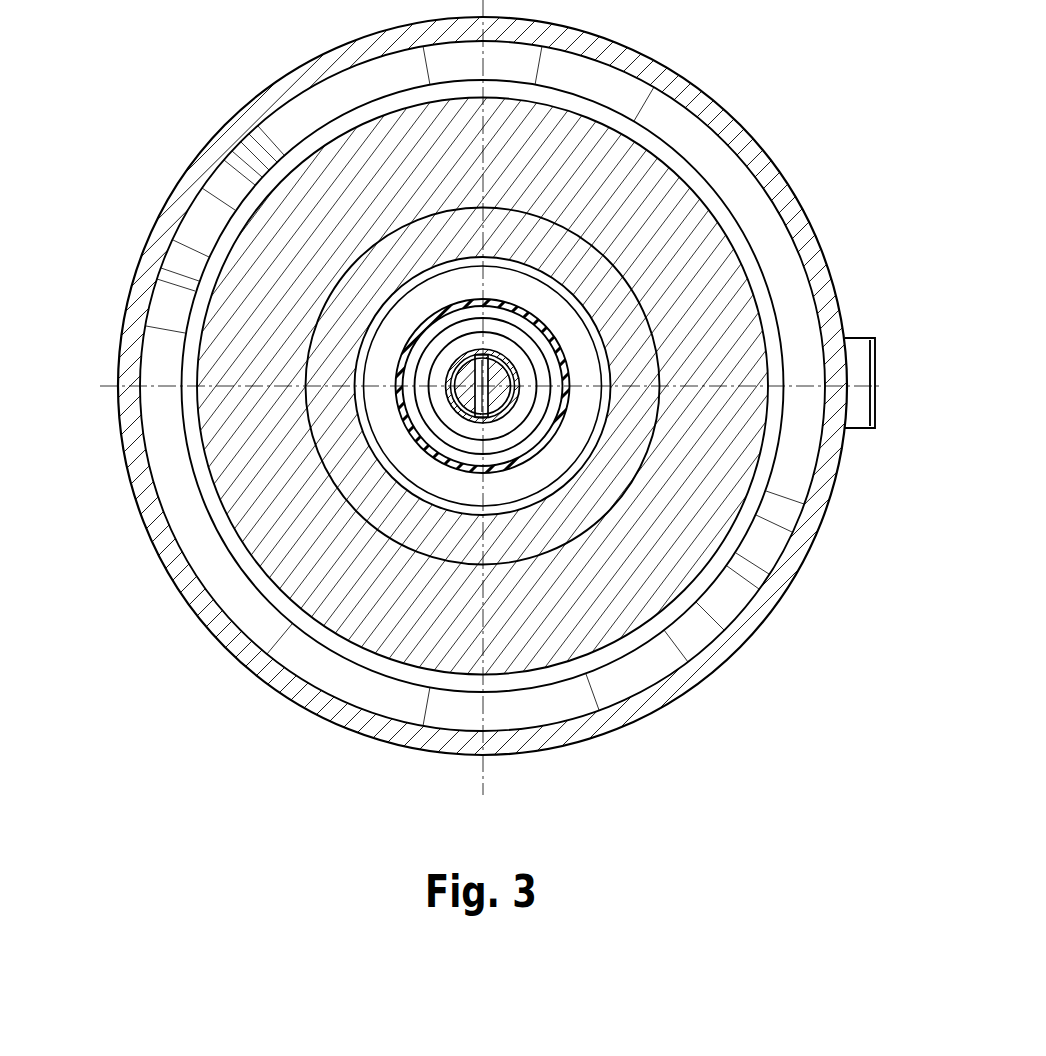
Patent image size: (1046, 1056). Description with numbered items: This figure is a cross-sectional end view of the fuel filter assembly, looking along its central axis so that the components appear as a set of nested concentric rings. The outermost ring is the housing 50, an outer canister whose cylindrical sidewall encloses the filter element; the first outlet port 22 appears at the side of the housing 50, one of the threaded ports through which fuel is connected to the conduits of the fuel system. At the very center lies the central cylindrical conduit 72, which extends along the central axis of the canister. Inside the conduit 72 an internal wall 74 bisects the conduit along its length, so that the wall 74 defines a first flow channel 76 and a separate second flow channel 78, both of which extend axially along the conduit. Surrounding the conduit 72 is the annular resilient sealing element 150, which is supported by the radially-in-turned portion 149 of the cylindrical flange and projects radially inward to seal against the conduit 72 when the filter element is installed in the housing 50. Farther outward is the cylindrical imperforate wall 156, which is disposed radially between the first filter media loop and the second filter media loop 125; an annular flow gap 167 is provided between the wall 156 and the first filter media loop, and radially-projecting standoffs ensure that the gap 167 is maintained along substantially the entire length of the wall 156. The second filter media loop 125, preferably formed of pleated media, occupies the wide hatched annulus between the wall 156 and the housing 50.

The first outlet port 22 is at (877, 408).
The housing 50 is at (803, 229).
The central cylindrical conduit 72 is at (495, 358).
The internal wall 74 is at (465, 373).
The first flow channel 76 is at (467, 378).
The second flow channel 78 is at (492, 392).
The second filter media loop 125 is at (283, 538).
The radially-in-turned portion 149 is at (453, 427).
The annular resilient sealing element 150 is at (460, 357).
The cylindrical imperforate wall 156 is at (403, 412).
The annular flow gap 167 is at (577, 433).